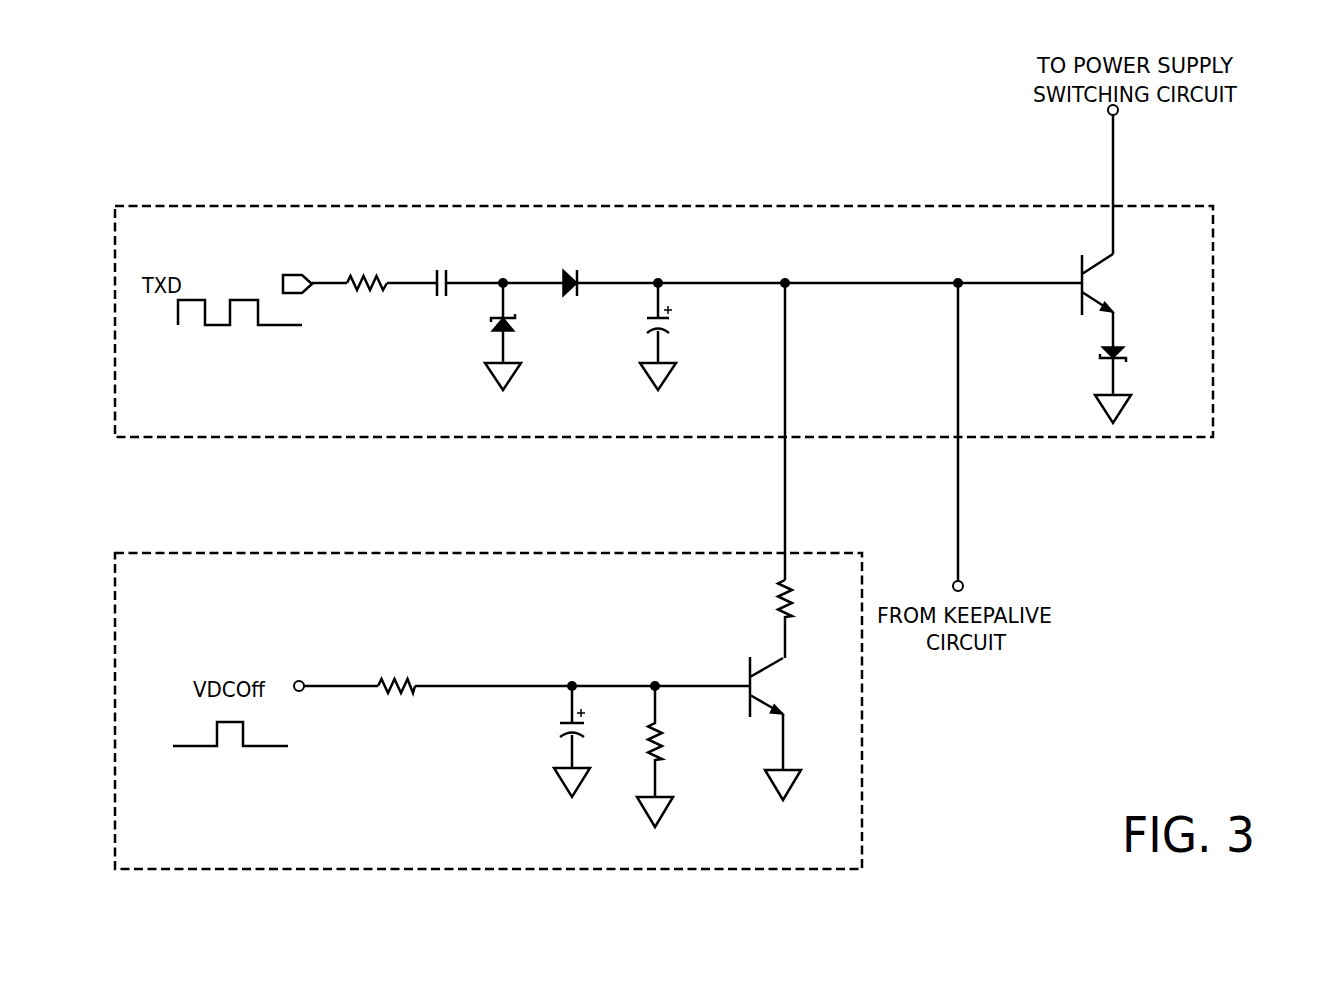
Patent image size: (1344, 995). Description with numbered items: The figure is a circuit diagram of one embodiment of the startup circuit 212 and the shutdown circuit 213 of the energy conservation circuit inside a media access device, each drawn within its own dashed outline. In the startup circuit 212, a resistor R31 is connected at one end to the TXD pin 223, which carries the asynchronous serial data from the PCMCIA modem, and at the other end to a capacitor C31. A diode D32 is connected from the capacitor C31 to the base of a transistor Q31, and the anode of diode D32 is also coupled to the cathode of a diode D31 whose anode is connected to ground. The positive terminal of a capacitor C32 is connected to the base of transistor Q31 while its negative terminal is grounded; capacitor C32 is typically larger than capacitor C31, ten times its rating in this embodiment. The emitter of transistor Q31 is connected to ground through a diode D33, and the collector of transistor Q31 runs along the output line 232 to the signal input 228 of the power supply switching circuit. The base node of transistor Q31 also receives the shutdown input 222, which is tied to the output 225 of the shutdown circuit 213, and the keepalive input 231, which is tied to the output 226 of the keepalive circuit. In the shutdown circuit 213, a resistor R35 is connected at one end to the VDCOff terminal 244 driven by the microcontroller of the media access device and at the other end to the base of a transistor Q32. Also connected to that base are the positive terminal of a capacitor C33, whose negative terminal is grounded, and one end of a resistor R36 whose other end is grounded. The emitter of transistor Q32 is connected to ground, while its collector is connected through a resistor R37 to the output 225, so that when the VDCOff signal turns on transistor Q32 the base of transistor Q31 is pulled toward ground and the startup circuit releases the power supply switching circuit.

The startup circuit 212 is at (722, 206).
The shutdown circuit 213 is at (467, 553).
The shutdown input 222 is at (785, 437).
The TXD pin 223 is at (296, 274).
The output of shutdown circuit 225 is at (785, 554).
The output of keepalive circuit 226 is at (963, 584).
The signal input of power supply switching circuit 228 is at (1106, 110).
The keepalive input 231 is at (958, 437).
The output line 232 is at (1117, 206).
The VDCOff input terminal 244 is at (300, 680).
The resistor R31 is at (367, 275).
The capacitor C31 is at (457, 281).
The diode D31 is at (490, 322).
The diode D32 is at (585, 280).
The capacitor C32 is at (652, 326).
The transistor Q31 is at (1116, 252).
The diode D33 is at (1128, 356).
The resistor R37 is at (780, 607).
The transistor Q32 is at (787, 656).
The resistor R35 is at (402, 683).
The capacitor C33 is at (563, 735).
The resistor R36 is at (663, 745).